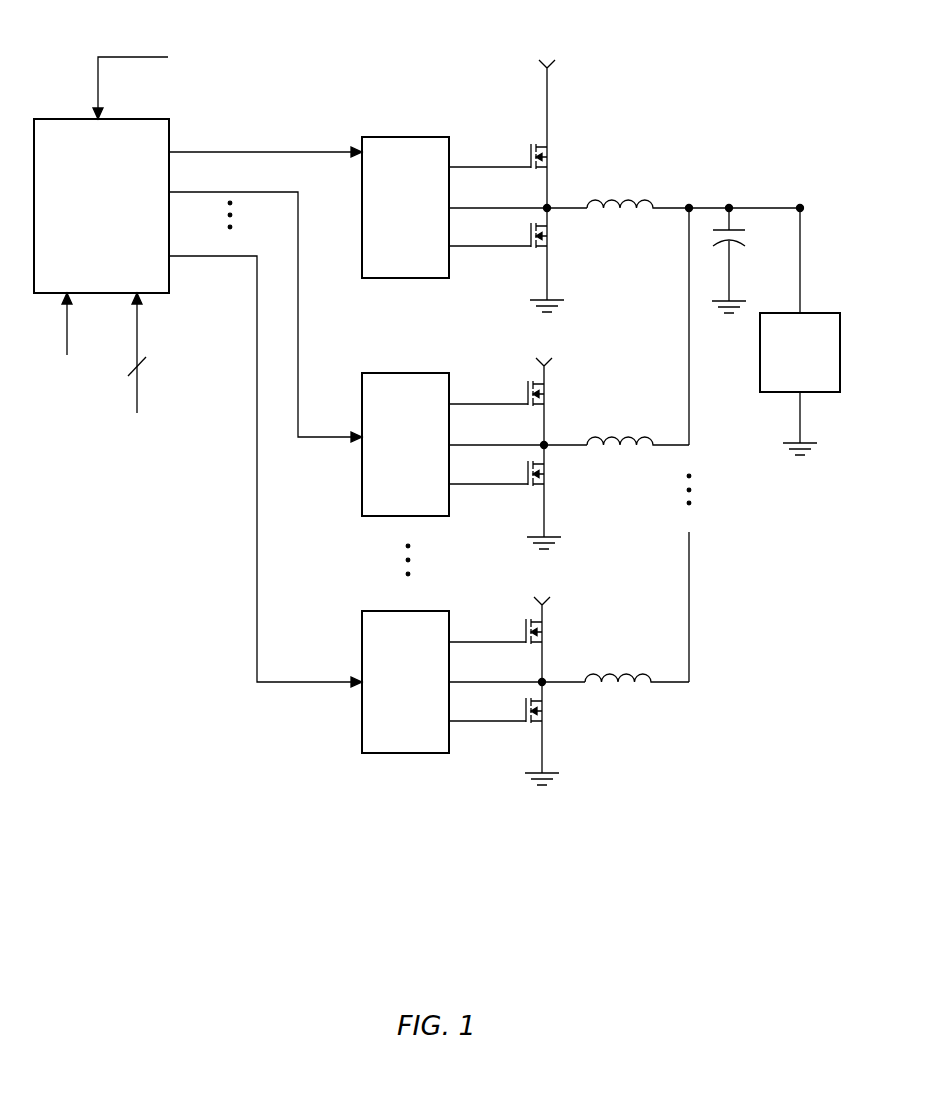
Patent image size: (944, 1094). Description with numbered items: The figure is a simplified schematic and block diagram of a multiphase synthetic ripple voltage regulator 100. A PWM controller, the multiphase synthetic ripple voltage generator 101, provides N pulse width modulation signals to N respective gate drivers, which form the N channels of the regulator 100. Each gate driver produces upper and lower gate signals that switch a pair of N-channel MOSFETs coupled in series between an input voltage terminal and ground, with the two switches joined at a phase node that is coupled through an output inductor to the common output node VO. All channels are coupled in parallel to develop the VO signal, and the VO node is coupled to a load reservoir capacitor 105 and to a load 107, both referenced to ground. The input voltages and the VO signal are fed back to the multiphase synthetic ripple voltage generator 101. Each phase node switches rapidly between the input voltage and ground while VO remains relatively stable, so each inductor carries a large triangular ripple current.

The multiphase synthetic ripple voltage regulator 100 is at (709, 112).
The multiphase synthetic ripple voltage generator 101 is at (101, 206).
The load reservoir capacitor 105 is at (746, 243).
The load 107 is at (800, 331).